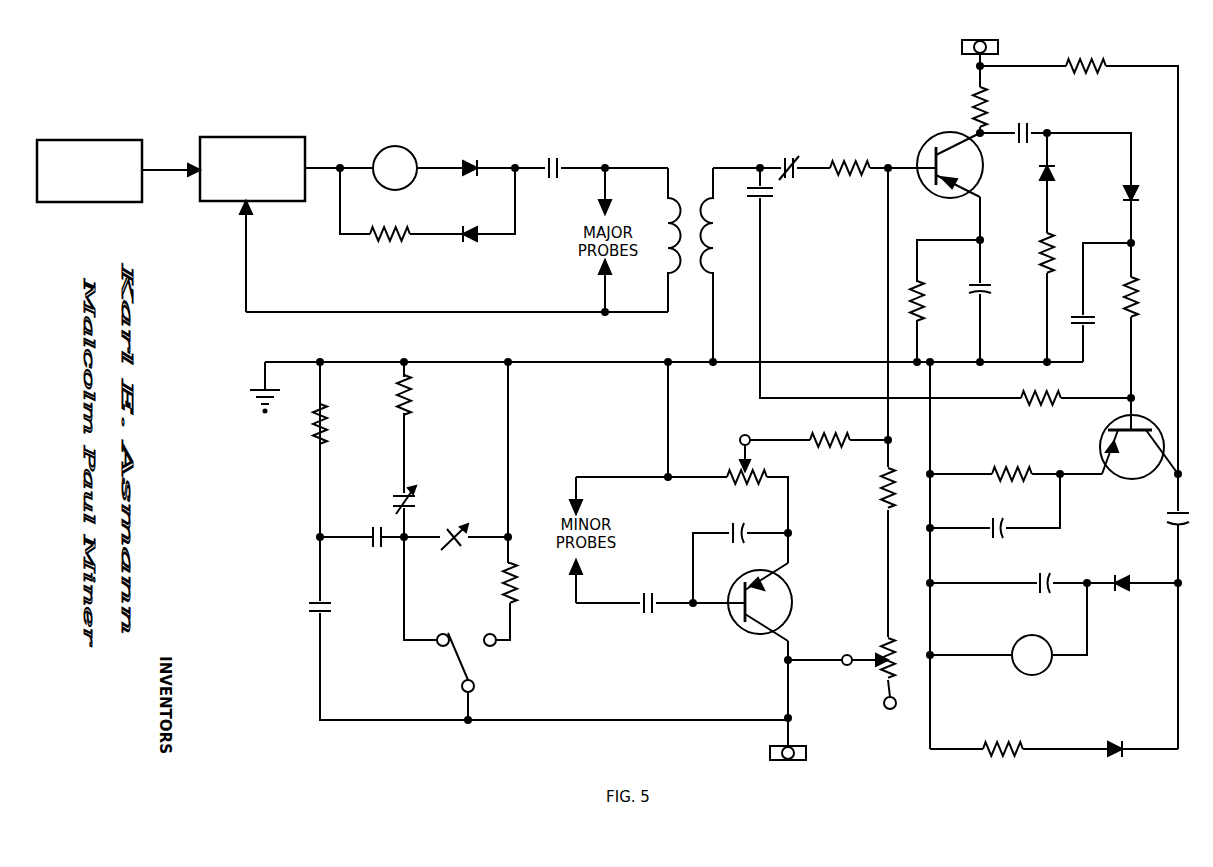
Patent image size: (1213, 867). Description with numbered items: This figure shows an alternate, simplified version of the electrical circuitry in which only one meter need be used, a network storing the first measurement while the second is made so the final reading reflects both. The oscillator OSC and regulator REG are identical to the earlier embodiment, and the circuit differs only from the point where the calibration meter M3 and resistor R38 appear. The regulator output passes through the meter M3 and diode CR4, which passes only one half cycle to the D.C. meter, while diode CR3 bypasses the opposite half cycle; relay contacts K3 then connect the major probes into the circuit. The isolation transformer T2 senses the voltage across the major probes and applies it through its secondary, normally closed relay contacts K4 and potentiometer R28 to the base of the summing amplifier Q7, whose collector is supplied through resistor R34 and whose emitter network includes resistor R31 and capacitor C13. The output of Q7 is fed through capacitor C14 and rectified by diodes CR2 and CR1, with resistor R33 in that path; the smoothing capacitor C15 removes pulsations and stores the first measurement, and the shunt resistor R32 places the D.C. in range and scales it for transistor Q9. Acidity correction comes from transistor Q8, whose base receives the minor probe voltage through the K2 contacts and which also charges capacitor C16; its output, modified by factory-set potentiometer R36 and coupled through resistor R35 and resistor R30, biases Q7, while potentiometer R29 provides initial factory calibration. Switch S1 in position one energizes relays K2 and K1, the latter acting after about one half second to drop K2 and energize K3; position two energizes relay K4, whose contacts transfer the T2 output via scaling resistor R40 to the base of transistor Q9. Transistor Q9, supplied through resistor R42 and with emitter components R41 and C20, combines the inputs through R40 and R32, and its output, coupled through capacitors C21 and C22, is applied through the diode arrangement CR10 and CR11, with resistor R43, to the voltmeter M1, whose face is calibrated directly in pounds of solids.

The oscillator OSC is at (89, 171).
The regulator REG is at (252, 169).
The current calibration meter M3 is at (395, 155).
The diode CR4 is at (470, 156).
The relay K3 is at (438, 289).
The resistor R38 is at (390, 223).
The diode CR3 is at (470, 223).
The isolation transformer T2 is at (690, 252).
The relay K4 is at (560, 385).
The potentiometer R28 is at (850, 156).
The summing amplifier transistor Q7 is at (941, 171).
The resistor R34 is at (959, 107).
The capacitor C14 is at (1023, 124).
The diode CR2 is at (1066, 158).
The resistor R33 is at (1027, 253).
The diode CR1 is at (1110, 194).
The shunt resistor R32 is at (1149, 297).
The smoothing capacitor C15 is at (1101, 302).
The resistor R31 is at (934, 301).
The capacitor C13 is at (997, 301).
The resistor R42 is at (1079, 285).
The scaling resistor R40 is at (1076, 388).
The relay K2 is at (527, 494).
The time-delay relay K1 is at (429, 518).
The switch S1 is at (468, 664).
The potentiometer R36 is at (732, 459).
The resistor R35 is at (830, 429).
The capacitor C16 is at (740, 554).
The transistor Q8 is at (776, 602).
The resistor R30 is at (871, 338).
The potentiometer R29 is at (872, 668).
The resistor R41 is at (1016, 463).
The transistor Q9 is at (1122, 447).
The capacitor C20 is at (995, 506).
The capacitor C21 is at (1158, 519).
The capacitor C22 is at (1008, 574).
The diode CR10 is at (1122, 572).
The voltmeter M1 is at (1008, 629).
The resistor R43 is at (1018, 738).
The diode CR11 is at (1136, 739).